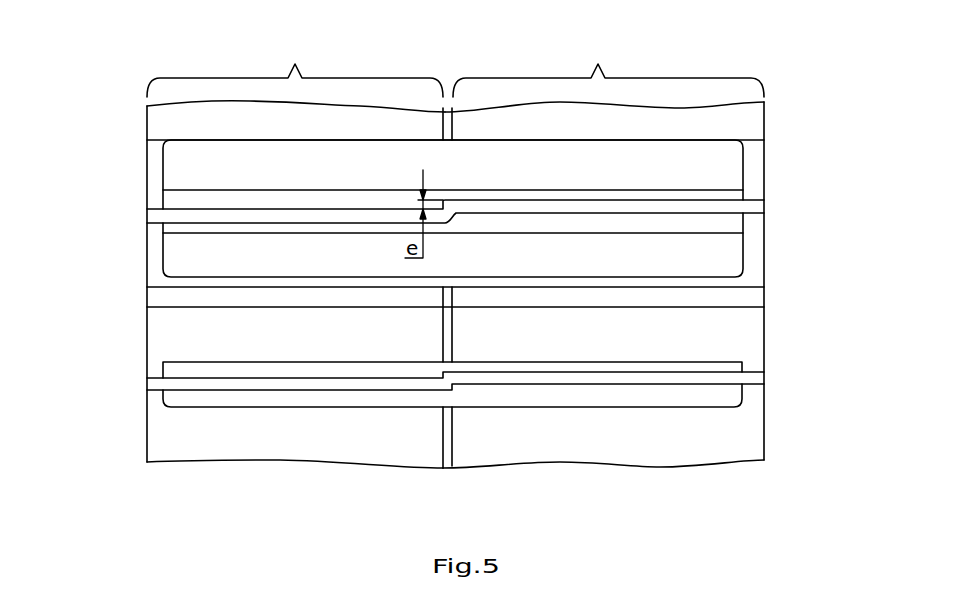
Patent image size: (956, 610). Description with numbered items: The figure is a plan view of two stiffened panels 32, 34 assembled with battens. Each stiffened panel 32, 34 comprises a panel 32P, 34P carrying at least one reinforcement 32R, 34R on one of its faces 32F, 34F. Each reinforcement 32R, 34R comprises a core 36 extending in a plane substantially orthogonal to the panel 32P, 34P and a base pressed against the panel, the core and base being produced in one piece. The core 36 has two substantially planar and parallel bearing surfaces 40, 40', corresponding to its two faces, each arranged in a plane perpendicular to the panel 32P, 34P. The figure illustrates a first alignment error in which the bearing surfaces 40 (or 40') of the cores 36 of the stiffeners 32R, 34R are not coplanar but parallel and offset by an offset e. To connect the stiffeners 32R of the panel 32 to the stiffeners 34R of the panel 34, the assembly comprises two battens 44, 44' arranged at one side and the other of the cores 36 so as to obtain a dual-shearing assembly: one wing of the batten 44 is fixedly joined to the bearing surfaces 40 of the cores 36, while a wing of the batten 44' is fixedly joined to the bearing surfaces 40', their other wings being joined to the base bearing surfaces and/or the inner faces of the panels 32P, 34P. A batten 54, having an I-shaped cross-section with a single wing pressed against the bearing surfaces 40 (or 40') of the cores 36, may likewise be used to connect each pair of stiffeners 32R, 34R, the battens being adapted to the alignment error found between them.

The stiffened panel 32 is at (295, 67).
The stiffened panel 34 is at (608, 67).
The face of panel 32F is at (153, 115).
The face of panel 34F is at (758, 115).
The reinforcement 32R is at (150, 214).
The reinforcement 34R is at (760, 208).
The panel 32P is at (163, 447).
The panel 34P is at (710, 457).
The core 36 is at (173, 218).
The bearing surface 40 is at (433, 324).
The bearing surface 40' is at (454, 246).
The batten 44 is at (139, 256).
The batten 44' is at (133, 131).
The batten 54 is at (628, 385).